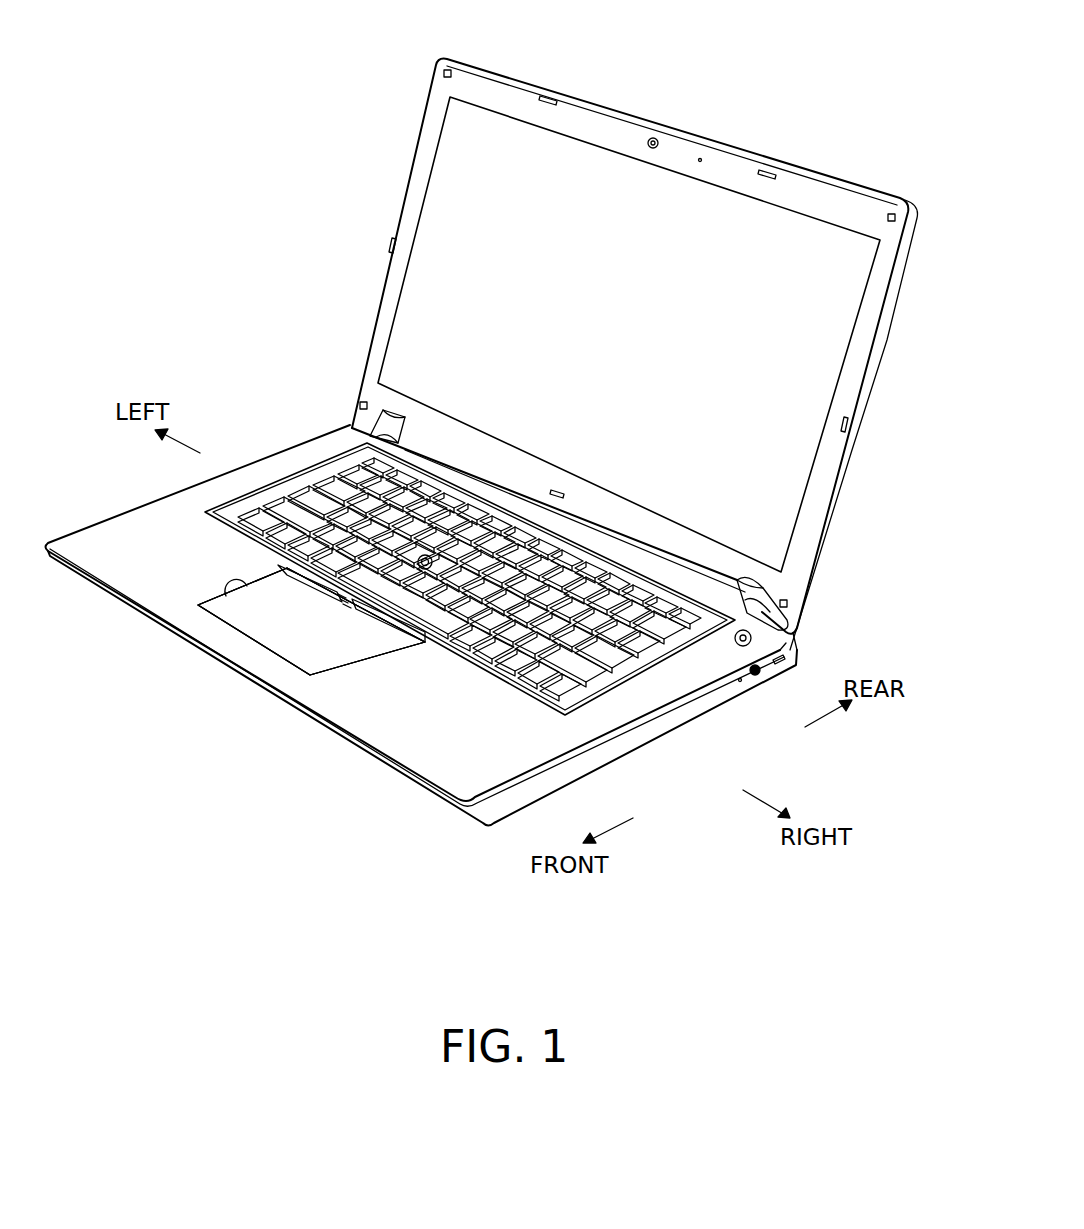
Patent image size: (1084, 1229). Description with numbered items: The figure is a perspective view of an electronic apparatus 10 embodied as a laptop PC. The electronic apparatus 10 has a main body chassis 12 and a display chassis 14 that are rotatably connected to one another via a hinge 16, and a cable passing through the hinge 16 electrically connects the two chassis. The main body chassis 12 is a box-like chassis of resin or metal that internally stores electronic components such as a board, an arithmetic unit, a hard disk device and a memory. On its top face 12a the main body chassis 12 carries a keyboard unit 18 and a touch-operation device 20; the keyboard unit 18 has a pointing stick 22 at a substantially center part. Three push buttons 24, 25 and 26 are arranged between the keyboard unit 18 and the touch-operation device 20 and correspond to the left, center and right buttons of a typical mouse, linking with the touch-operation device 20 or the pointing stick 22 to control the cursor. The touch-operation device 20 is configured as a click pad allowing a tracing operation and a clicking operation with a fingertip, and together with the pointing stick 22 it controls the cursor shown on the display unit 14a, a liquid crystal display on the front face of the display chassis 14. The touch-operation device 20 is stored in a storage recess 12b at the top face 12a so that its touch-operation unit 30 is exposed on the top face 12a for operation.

The electronic apparatus 10 is at (218, 134).
The main body chassis 12 is at (128, 572).
The top face 12a is at (460, 756).
The storage recess 12b is at (240, 588).
The display chassis 14 is at (885, 333).
The display unit 14a is at (810, 384).
The hinge 16 is at (377, 418).
The keyboard unit 18 is at (302, 490).
The touch-operation device 20 is at (244, 639).
The pointing stick 22 is at (432, 560).
The push button 24 is at (227, 592).
The push button 25 is at (345, 598).
The push button 26 is at (385, 612).
The touch-operation unit 30 is at (233, 612).